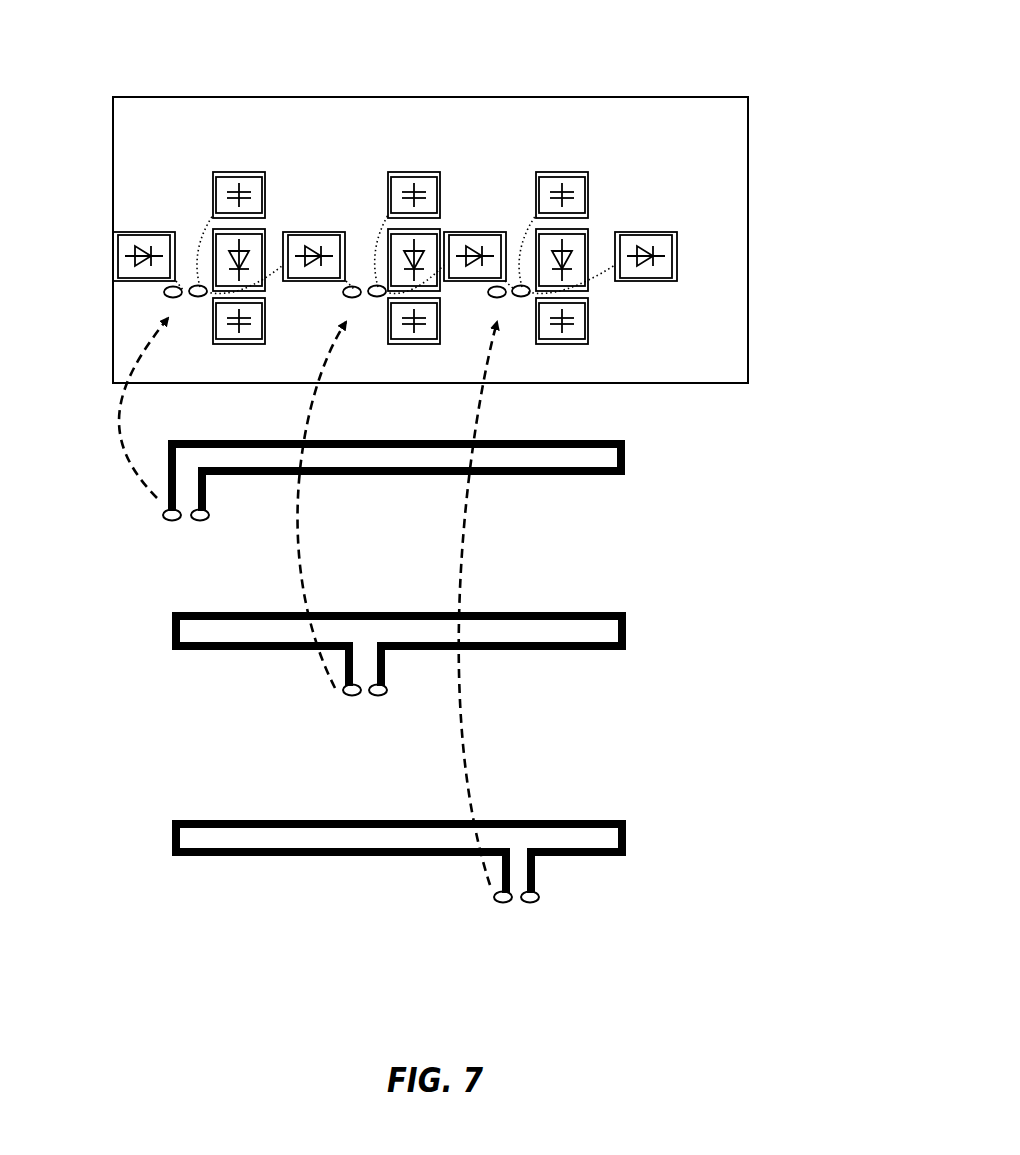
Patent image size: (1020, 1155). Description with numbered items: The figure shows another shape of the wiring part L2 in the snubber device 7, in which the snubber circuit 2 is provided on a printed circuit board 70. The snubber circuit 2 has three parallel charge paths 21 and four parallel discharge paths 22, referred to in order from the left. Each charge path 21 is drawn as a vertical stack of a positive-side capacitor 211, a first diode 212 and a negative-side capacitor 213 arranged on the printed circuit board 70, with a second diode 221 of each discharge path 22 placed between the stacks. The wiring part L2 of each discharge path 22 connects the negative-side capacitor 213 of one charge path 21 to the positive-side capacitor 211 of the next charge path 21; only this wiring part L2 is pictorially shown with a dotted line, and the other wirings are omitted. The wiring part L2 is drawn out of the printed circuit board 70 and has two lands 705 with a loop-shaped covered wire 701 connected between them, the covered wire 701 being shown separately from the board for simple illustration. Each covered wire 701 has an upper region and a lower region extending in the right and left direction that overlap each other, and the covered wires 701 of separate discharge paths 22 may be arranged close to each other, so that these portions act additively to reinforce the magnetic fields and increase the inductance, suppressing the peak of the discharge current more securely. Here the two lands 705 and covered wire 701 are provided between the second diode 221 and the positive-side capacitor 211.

The snubber circuit 2 is at (435, 496).
The snubber device 7 is at (435, 496).
The printed circuit board 70 is at (748, 97).
The charge path 21 is at (270, 88).
The discharge path 22 is at (420, 194).
The wiring part L2 is at (215, 167).
The positive-side capacitor 211 is at (588, 175).
The first diode 212 is at (588, 291).
The negative-side capacitor 213 is at (588, 346).
The second diode 221 is at (158, 215).
The covered wire 701 is at (626, 471).
The land 705 is at (176, 297).